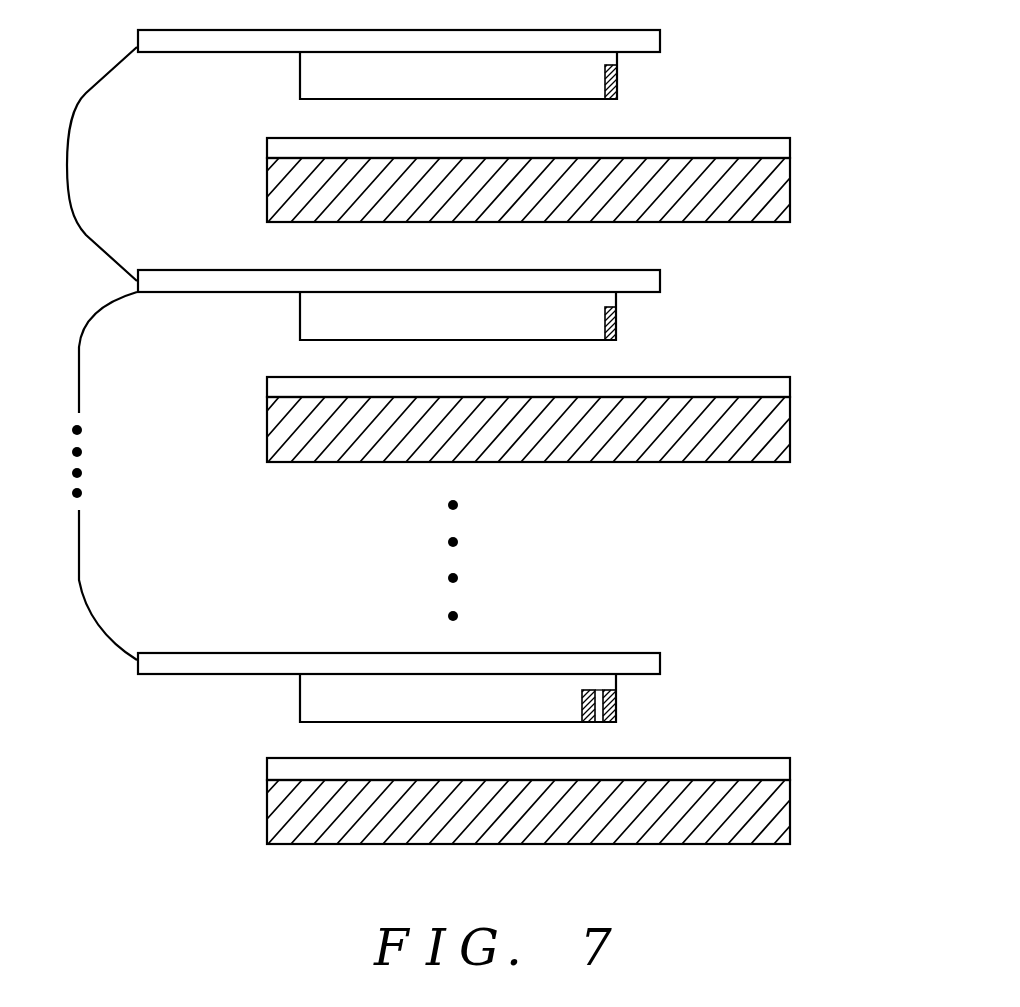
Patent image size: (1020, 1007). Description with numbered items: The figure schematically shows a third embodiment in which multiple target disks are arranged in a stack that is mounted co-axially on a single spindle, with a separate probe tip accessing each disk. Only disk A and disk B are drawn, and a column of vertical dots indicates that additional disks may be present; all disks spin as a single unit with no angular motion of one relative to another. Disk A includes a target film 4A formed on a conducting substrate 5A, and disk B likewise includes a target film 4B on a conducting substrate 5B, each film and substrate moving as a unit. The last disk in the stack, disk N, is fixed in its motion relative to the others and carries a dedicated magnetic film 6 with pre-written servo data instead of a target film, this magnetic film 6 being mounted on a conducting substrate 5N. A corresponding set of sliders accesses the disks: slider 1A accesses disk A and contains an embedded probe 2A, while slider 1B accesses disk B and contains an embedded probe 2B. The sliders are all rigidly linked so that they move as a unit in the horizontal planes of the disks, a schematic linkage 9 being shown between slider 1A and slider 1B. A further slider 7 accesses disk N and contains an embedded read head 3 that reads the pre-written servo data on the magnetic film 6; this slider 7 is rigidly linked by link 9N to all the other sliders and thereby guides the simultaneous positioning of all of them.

The slider 1A is at (315, 78).
The embedded probe 2A is at (617, 72).
The target film 4A is at (778, 147).
The conducting substrate 5A is at (780, 185).
The disk A is at (256, 185).
The slider 1B is at (315, 318).
The embedded probe 2B is at (616, 313).
The target film 4B is at (778, 387).
The conducting substrate 5B is at (780, 425).
The disk B is at (256, 425).
The embedded read head 3 is at (601, 690).
The slider 7 is at (300, 693).
The magnetic film 6 is at (778, 769).
The conducting substrate 5N is at (780, 808).
The disk N is at (256, 806).
The linkage 9 is at (74, 114).
The rigid link 9N is at (78, 366).